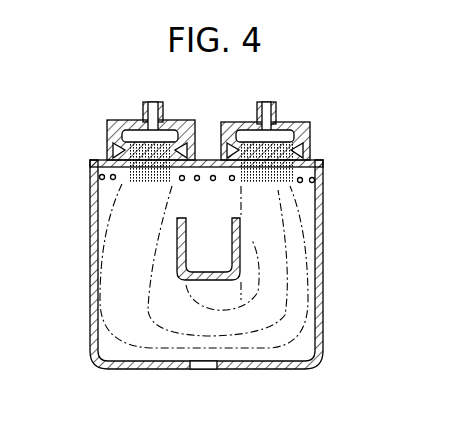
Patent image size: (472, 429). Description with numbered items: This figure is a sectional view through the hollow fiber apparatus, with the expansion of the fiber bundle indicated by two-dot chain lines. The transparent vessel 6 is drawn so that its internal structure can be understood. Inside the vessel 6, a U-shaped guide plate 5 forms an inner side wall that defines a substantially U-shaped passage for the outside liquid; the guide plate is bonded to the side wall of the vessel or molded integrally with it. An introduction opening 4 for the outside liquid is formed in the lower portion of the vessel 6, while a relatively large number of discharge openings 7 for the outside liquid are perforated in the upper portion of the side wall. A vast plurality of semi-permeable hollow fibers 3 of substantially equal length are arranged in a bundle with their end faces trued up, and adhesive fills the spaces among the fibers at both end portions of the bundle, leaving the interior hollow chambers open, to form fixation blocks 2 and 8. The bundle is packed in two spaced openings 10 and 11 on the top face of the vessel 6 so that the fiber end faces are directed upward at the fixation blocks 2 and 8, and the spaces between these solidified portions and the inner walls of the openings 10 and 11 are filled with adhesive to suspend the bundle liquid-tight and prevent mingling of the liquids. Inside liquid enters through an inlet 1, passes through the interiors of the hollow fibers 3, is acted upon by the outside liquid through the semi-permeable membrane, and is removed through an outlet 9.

The inlet 1 is at (145, 110).
The fixation block 2 is at (117, 143).
The hollow fibers 3 is at (110, 302).
The introduction opening 4 is at (202, 368).
The U-shaped guide plate 5 is at (177, 250).
The vessel 6 is at (322, 288).
The discharge openings 7 is at (99, 176).
The fixation block 8 is at (303, 145).
The outlet 9 is at (277, 108).
The opening 10 is at (123, 158).
The opening 11 is at (292, 188).